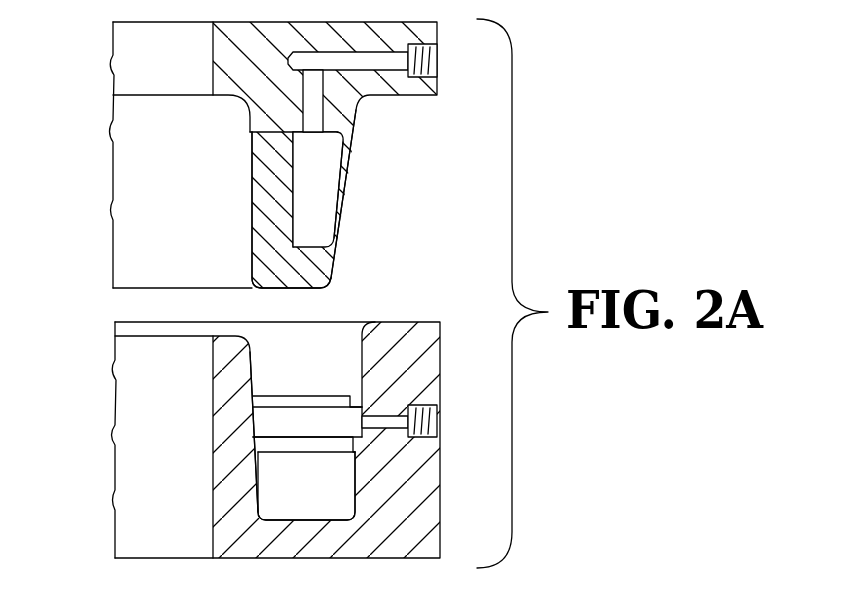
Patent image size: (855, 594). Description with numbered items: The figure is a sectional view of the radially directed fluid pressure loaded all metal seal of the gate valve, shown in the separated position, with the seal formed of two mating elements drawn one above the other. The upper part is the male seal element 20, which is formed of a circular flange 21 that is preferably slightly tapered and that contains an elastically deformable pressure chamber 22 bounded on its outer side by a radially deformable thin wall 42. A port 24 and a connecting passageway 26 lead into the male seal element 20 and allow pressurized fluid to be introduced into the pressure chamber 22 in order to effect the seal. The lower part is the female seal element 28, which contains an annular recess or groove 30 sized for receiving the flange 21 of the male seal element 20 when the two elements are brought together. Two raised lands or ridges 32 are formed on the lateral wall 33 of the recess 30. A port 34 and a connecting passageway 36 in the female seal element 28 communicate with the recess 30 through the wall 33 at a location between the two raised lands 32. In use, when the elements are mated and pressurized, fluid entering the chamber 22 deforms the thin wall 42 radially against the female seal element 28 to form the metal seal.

The male seal element 20 is at (112, 230).
The circular flange 21 is at (255, 230).
The pressure chamber 22 is at (340, 220).
The port 24 is at (440, 65).
The connecting passageway 26 is at (390, 58).
The thin wall 42 is at (347, 197).
The female seal element 28 is at (117, 497).
The annular recess 30 is at (337, 345).
The raised lands 32 is at (294, 446).
The lateral wall 33 is at (355, 482).
The port 34 is at (443, 413).
The connecting passageway 36 is at (388, 428).